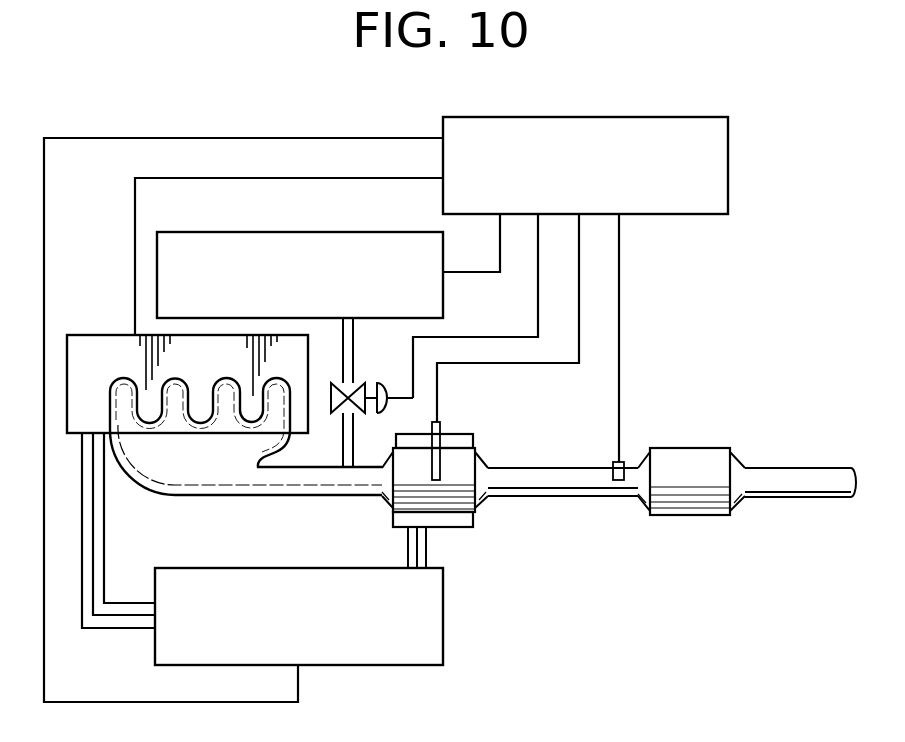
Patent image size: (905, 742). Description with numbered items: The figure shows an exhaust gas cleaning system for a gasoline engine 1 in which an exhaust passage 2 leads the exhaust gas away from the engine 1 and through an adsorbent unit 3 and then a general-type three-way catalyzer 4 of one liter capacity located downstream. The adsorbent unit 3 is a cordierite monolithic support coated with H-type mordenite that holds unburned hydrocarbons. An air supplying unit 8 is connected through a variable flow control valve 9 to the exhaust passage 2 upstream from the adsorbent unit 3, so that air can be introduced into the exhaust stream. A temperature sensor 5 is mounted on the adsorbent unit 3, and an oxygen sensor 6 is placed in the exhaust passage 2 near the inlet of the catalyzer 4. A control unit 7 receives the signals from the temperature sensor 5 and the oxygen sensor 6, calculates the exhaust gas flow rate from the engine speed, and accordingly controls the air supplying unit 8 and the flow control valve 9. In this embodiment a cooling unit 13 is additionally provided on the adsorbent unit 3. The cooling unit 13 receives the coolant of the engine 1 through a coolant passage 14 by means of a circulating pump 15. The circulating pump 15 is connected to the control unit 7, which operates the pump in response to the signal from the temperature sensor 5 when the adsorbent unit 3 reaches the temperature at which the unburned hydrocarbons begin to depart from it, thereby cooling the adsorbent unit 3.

The gasoline engine 1 is at (97, 334).
The exhaust passage 2 is at (236, 481).
The adsorbent unit 3 is at (483, 496).
The three-way catalyzer 4 is at (697, 497).
The temperature sensor 5 is at (447, 427).
The oxygen sensor 6 is at (621, 460).
The control unit 7 is at (728, 153).
The air supplying unit 8 is at (308, 231).
The variable flow control valve 9 is at (342, 398).
The cooling unit 13 is at (466, 521).
The coolant passage 14 is at (430, 547).
The circulating pump 15 is at (443, 636).